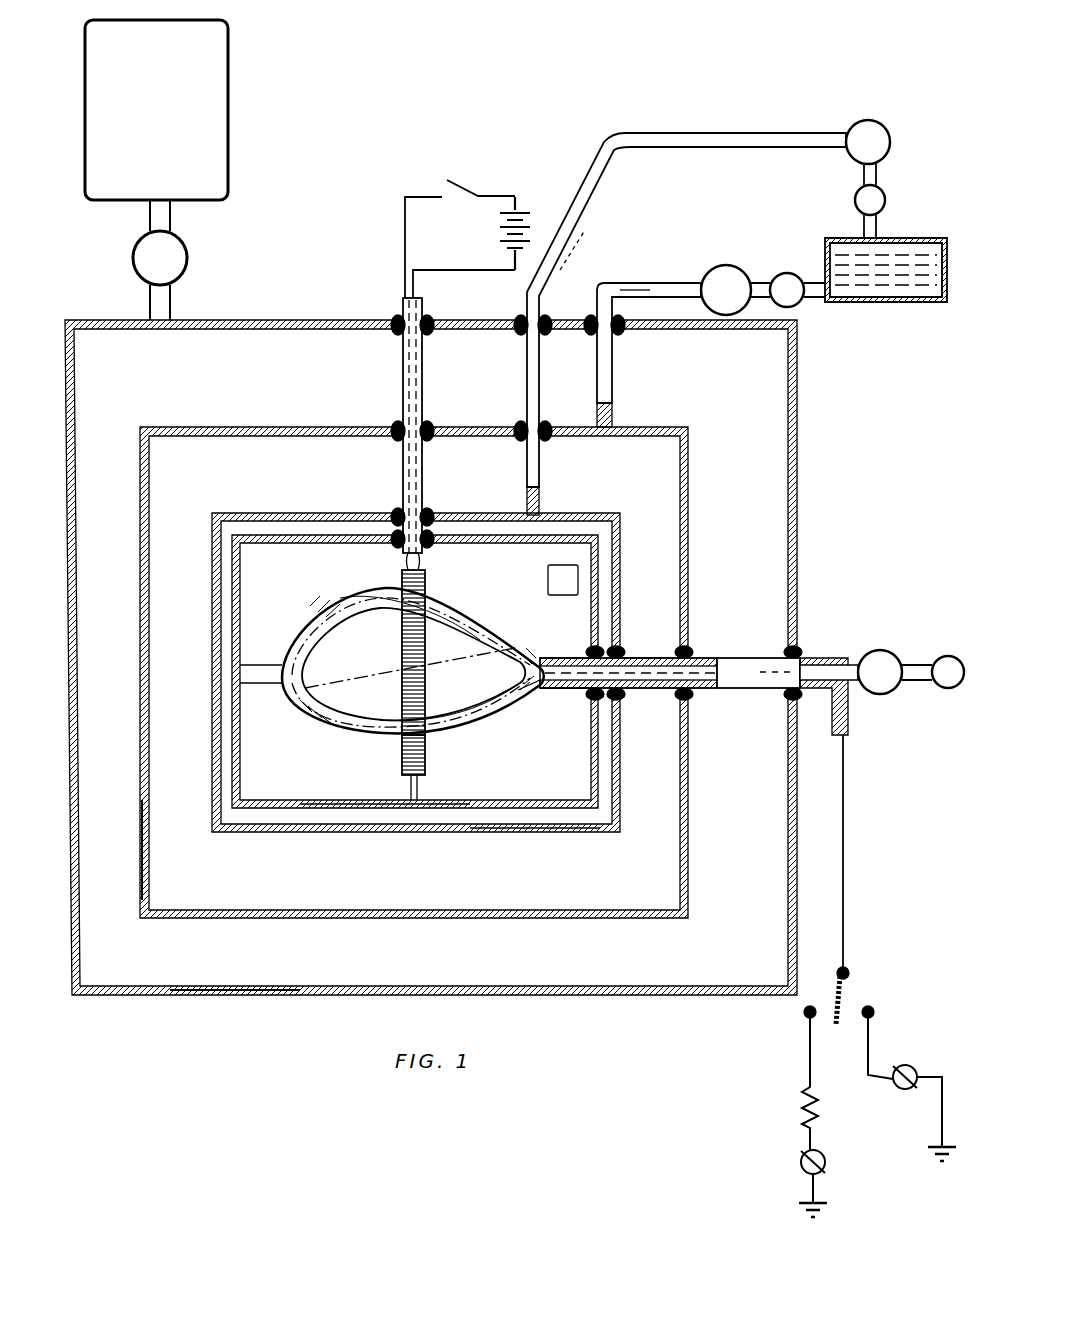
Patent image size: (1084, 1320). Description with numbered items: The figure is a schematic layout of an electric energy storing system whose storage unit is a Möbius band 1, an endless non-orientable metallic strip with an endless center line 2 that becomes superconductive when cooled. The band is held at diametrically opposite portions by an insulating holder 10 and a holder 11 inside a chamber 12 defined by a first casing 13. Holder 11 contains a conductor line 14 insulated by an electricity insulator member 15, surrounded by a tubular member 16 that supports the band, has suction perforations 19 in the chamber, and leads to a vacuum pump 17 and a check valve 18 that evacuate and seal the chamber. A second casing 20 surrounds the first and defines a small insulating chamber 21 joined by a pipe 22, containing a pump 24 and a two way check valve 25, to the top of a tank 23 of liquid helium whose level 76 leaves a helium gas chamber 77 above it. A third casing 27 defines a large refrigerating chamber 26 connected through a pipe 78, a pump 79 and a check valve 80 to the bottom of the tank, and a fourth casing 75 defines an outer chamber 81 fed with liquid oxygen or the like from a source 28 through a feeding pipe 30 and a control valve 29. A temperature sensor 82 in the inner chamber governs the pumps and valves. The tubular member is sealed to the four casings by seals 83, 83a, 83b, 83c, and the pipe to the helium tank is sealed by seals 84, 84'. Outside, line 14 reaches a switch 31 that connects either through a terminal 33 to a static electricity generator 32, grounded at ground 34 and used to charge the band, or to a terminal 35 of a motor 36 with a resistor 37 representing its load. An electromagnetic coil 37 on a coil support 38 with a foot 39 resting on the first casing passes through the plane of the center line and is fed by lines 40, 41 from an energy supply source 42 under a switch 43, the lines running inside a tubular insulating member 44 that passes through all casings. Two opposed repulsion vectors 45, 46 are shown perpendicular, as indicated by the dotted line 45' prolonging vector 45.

The Möbius band 1 is at (478, 612).
The center line 2 is at (498, 636).
The holder 10 is at (262, 690).
The holder 11 is at (566, 660).
The chamber 12 is at (282, 583).
The first casing 13 is at (552, 565).
The line 14 is at (846, 815).
The electricity insulator member 15 is at (850, 723).
The tubular member 16 is at (812, 663).
The vacuum pump 17 is at (882, 650).
The check valve 18 is at (948, 656).
The suction perforations 19 is at (574, 652).
The second casing 20 is at (405, 828).
The insulating chamber 21 is at (518, 828).
The pipe 22 is at (540, 356).
The tank 23 is at (942, 240).
The pump 24 is at (880, 122).
The controllable two way check valve 25 is at (855, 200).
The refrigerating chamber 26 is at (200, 475).
The third casing 27 is at (145, 877).
The source of liquefied gas 28 is at (218, 112).
The control valve 29 is at (188, 255).
The feeding pipe 30 is at (173, 302).
The switch 31 is at (850, 990).
The static electricity generator 32 is at (898, 1068).
The terminal 33 is at (875, 1012).
The ground 34 is at (825, 1198).
The terminal 35 is at (804, 1012).
The motor 36 is at (802, 1170).
The electromagnetic coil 37 is at (426, 580).
The coil support 38 is at (428, 768).
The foot 39 is at (420, 790).
The line 40 is at (422, 300).
The line 41 is at (405, 258).
The energy supply source 42 is at (523, 210).
The switch 43 is at (478, 188).
The tubular insulating member 44 is at (425, 468).
The vector 45 is at (413, 660).
The dotted line 45' is at (410, 672).
The vector 46 is at (512, 672).
The fourth casing 75 is at (186, 996).
The level 76 is at (832, 243).
The helium gas chamber 77 is at (886, 245).
The pipe 78 is at (625, 283).
The pump 79 is at (726, 265).
The check valve 80 is at (787, 273).
The chamber 81 is at (118, 377).
The temperature sensor 82 is at (570, 590).
The seal 83 is at (615, 330).
The seal 83a is at (632, 657).
The seal 83b is at (694, 658).
The seal 83c is at (798, 650).
The seal 84 is at (552, 449).
The seal 84' is at (572, 266).